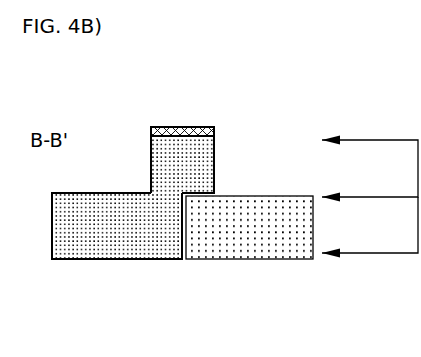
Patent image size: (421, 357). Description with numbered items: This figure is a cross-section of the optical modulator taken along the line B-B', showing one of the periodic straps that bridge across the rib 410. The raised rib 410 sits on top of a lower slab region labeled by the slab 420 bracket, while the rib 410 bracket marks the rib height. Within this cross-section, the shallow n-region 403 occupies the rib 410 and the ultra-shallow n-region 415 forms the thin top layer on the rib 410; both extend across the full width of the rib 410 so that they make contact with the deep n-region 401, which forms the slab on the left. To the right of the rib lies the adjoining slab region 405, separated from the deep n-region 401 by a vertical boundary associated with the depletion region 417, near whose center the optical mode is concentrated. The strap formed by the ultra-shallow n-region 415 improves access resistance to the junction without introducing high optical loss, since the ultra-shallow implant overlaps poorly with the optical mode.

The deep n-region 401 is at (88, 238).
The shallow n-region 403 is at (166, 178).
The second slab region 405 is at (237, 234).
The ultra-shallow n-region 415 is at (204, 127).
The depletion region 417 is at (182, 260).
The rib 410 is at (370, 169).
The slab height 420 is at (370, 227).